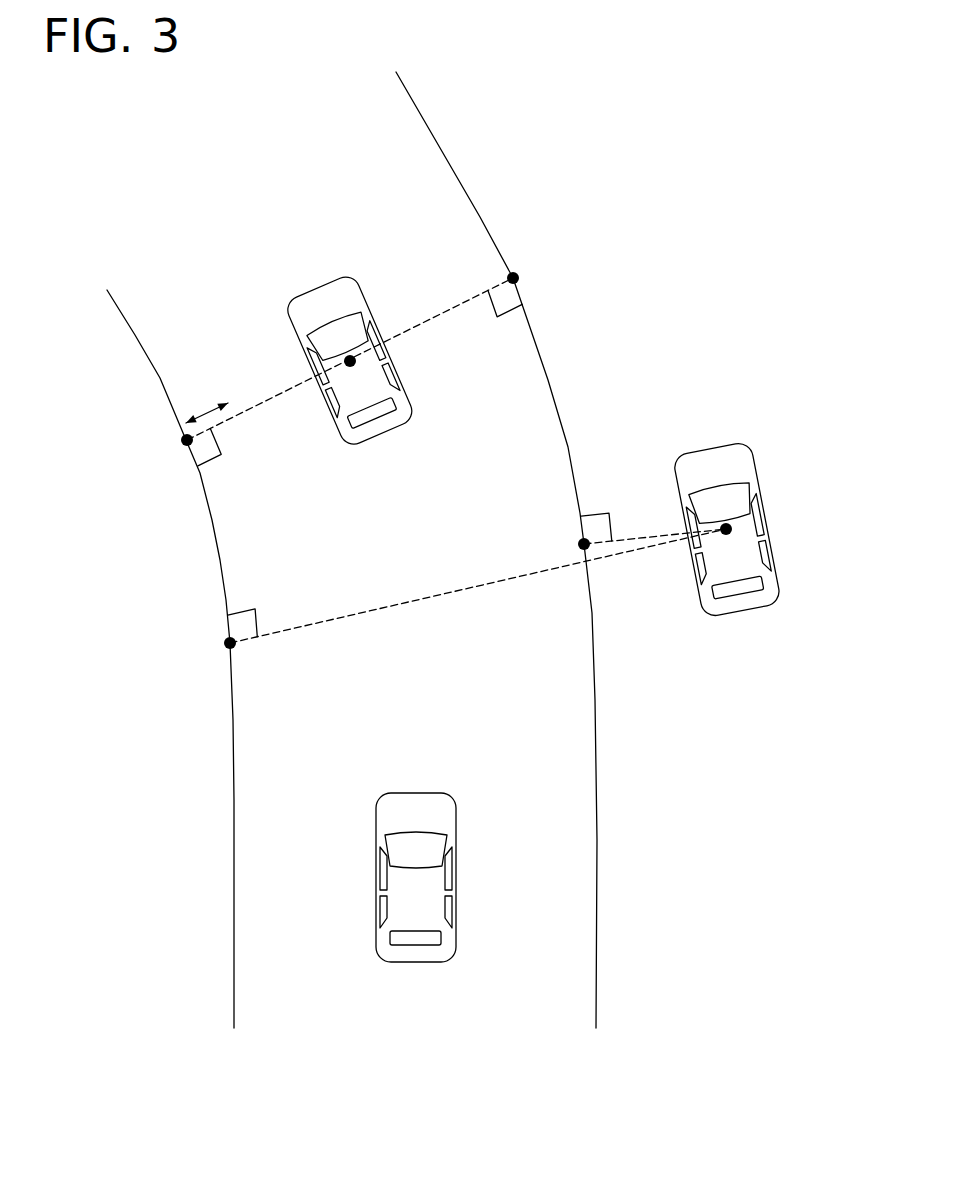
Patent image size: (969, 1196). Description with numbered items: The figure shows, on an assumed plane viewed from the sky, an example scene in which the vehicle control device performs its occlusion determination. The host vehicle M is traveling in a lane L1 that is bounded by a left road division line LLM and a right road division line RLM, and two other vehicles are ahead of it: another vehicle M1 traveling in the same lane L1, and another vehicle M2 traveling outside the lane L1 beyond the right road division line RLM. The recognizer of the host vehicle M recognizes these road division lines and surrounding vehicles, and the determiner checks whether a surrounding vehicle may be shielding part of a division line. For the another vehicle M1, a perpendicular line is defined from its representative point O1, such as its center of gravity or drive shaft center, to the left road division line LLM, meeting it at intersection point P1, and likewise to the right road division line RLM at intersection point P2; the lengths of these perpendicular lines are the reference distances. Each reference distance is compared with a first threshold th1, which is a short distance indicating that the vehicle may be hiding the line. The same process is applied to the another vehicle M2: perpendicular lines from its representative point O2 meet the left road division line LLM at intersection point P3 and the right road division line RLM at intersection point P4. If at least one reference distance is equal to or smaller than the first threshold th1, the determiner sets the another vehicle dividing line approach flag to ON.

The host vehicle M is at (415, 793).
The another vehicle M1 is at (313, 287).
The another vehicle M2 is at (707, 446).
The representative point O1 is at (350, 362).
The representative point O2 is at (726, 531).
The intersection point P1 is at (182, 443).
The intersection point P2 is at (520, 279).
The intersection point P3 is at (224, 644).
The intersection point P4 is at (578, 545).
The first threshold th1 is at (203, 396).
The left road division line LLM is at (233, 997).
The right road division line RLM is at (598, 997).
The lane L1 is at (430, 1036).